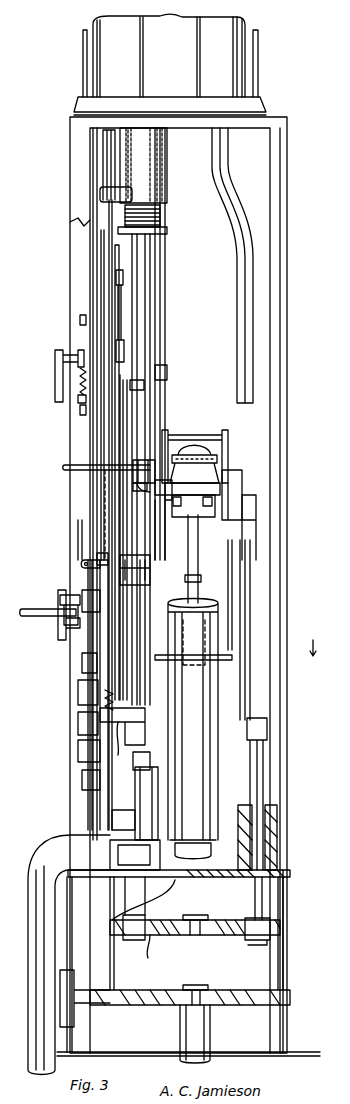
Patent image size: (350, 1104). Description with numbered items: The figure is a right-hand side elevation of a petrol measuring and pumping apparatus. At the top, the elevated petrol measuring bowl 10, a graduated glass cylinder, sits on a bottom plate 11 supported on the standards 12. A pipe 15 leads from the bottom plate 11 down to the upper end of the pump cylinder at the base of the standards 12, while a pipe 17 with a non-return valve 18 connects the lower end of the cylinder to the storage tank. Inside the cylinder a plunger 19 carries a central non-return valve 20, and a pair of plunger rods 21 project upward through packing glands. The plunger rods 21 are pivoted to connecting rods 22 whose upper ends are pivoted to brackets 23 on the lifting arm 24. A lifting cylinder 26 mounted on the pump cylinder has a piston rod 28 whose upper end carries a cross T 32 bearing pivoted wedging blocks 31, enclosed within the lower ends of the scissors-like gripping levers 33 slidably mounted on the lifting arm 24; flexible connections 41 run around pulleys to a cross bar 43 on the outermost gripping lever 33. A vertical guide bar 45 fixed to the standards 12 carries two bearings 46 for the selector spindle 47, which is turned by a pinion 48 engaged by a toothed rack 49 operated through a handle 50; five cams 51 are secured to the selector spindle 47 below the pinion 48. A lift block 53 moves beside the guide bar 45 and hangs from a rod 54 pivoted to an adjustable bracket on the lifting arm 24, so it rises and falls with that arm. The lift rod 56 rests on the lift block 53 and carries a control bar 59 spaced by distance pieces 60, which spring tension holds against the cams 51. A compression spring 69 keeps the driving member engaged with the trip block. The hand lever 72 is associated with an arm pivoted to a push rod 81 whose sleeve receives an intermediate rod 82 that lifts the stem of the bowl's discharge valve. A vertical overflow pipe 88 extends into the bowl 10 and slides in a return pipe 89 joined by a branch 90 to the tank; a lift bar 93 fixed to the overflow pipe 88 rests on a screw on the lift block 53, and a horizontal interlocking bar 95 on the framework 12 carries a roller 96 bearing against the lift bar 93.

The petrol measuring bowl 10 is at (170, 55).
The bottom plate 11 is at (262, 107).
The standards 12 is at (287, 158).
The pipe 15 is at (240, 345).
The pipe 17 is at (207, 1030).
The non-return valve 18 is at (197, 990).
The plunger 19 is at (156, 954).
The non-return valve 20 is at (192, 915).
The plunger rods 21 is at (263, 752).
The connecting rods 22 is at (245, 668).
The brackets 23 is at (232, 505).
The lifting arm 24 is at (222, 480).
The lifting cylinder 26 is at (205, 688).
The piston rod 28 is at (195, 570).
The wedging blocks 31 is at (250, 522).
The cross T 32 is at (0, 537).
The gripping levers 33 is at (190, 455).
The flexible connections 41 is at (230, 593).
The cross bar 43 is at (0, 462).
The guide bar 45 is at (105, 800).
The bearings 46 is at (85, 590).
The selector spindle 47 is at (88, 737).
The pinion 48 is at (78, 622).
The toothed rack 49 is at (73, 600).
The handle 50 is at (28, 616).
The cams 51 is at (82, 705).
The lift block 53 is at (122, 725).
The rod 54 is at (137, 485).
The lift rod 56 is at (105, 522).
The control bar 59 is at (88, 300).
The distance pieces 60 is at (97, 283).
The compression spring 69 is at (78, 390).
The hand lever 72 is at (58, 383).
The push rod 81 is at (122, 297).
The intermediate rod 82 is at (118, 240).
The overflow pipe 88 is at (151, 262).
The return pipe 89 is at (137, 762).
The branch 90 is at (28, 1098).
The lift bar 93 is at (125, 406).
The interlocking bar 95 is at (100, 553).
The roller 96 is at (125, 578).